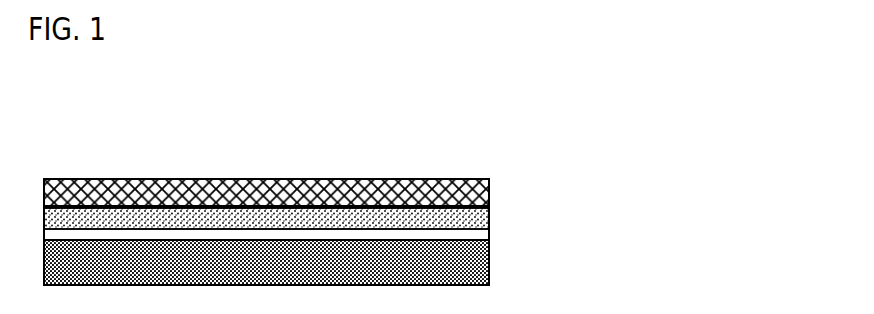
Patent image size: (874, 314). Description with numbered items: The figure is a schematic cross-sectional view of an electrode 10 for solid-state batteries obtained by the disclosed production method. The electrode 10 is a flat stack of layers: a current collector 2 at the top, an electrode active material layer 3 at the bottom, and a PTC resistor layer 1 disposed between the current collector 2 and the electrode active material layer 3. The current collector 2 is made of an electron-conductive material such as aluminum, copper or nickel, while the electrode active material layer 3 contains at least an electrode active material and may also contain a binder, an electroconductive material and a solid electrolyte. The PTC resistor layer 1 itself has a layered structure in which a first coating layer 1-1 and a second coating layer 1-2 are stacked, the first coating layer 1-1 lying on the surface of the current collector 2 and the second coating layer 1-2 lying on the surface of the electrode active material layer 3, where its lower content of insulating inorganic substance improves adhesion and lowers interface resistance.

The electrode for solid-state batteries 10 is at (360, 150).
The current collector 2 is at (490, 193).
The PTC resistor layer 1 is at (727, 174).
The first coating layer 1-1 is at (490, 218).
The second coating layer 1-2 is at (490, 238).
The electrode active material layer 3 is at (490, 265).